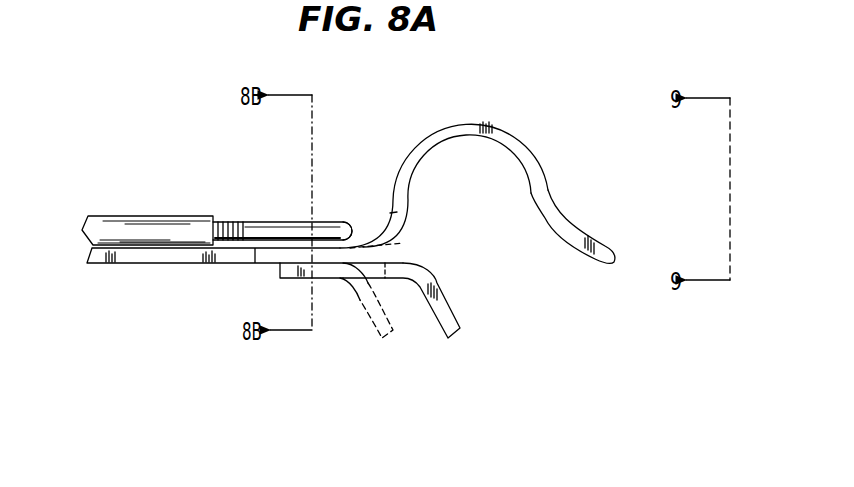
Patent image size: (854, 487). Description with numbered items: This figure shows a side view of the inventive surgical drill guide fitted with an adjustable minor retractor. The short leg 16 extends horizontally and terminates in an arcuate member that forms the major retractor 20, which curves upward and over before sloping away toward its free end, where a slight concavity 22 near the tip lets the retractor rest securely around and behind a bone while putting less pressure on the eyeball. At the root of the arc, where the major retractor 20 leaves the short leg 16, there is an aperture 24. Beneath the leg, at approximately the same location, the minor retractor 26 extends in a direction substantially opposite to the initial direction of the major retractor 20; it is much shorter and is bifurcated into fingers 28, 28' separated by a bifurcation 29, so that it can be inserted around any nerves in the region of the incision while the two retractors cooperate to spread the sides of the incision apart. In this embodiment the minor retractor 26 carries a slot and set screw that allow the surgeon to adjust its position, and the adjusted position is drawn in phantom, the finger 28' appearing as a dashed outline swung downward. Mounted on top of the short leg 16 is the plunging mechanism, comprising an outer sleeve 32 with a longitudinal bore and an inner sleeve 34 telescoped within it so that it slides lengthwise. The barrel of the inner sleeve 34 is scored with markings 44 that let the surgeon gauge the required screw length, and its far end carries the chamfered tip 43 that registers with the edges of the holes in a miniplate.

The short leg 16 is at (145, 263).
The outer sleeve 32 is at (132, 216).
The inner sleeve 34 is at (290, 222).
The markings 44 is at (236, 222).
The tip 43 is at (353, 227).
The major retractor 20 is at (568, 153).
The concavity 22 is at (560, 203).
The aperture 24 is at (402, 228).
The minor retractor 26 is at (341, 333).
The finger 28 is at (436, 322).
The finger 28' is at (397, 349).
The bifurcation 29 is at (440, 282).